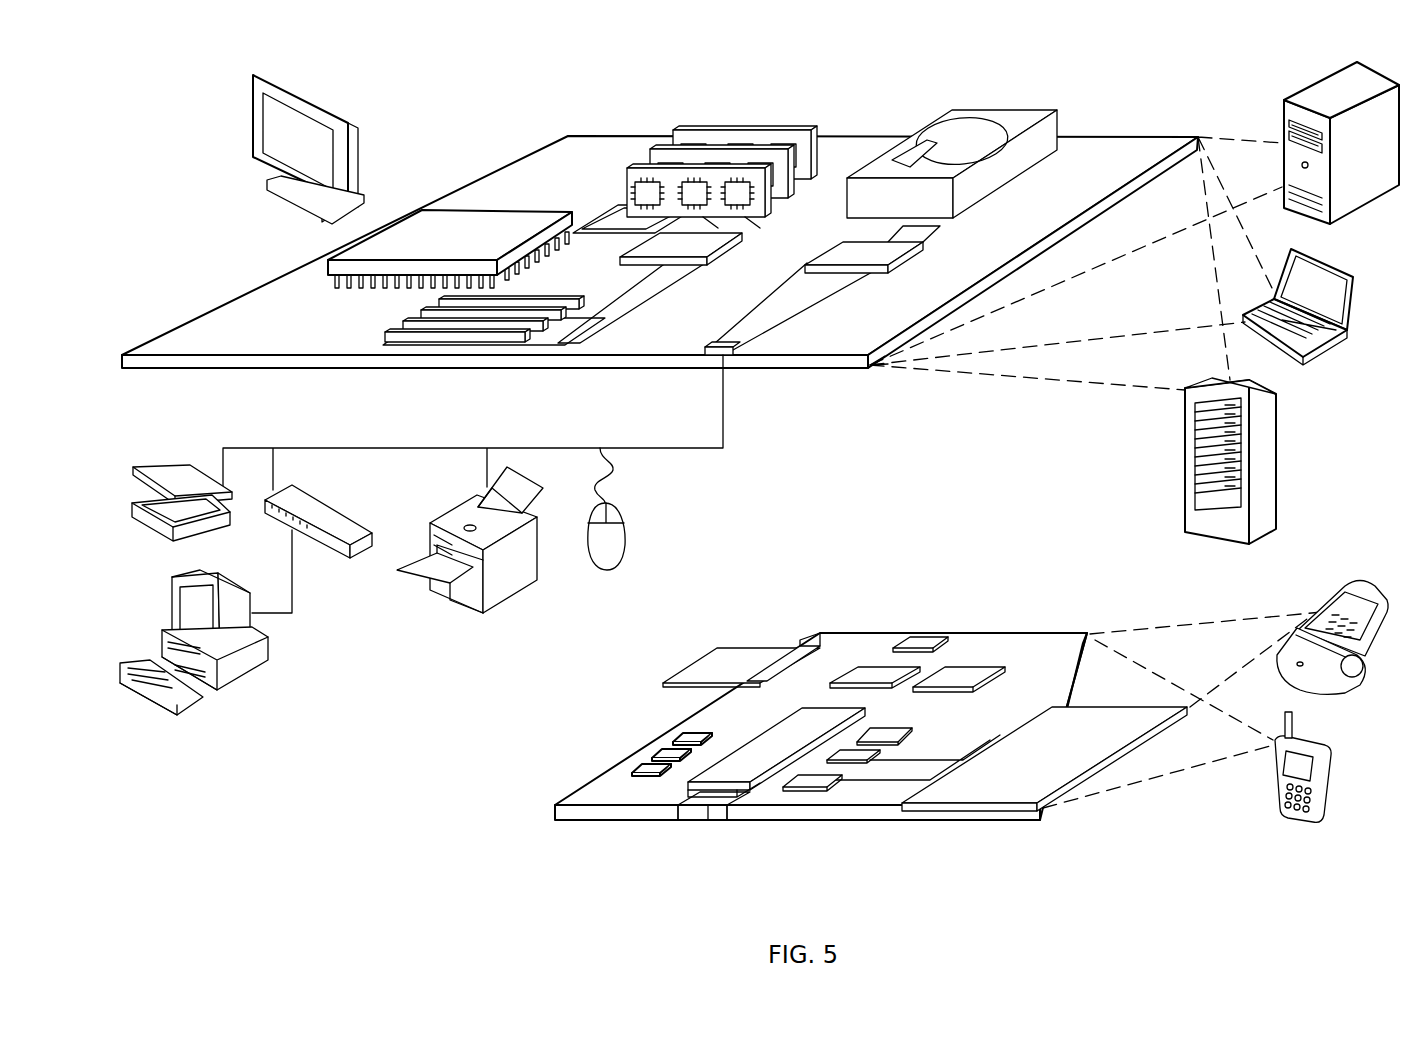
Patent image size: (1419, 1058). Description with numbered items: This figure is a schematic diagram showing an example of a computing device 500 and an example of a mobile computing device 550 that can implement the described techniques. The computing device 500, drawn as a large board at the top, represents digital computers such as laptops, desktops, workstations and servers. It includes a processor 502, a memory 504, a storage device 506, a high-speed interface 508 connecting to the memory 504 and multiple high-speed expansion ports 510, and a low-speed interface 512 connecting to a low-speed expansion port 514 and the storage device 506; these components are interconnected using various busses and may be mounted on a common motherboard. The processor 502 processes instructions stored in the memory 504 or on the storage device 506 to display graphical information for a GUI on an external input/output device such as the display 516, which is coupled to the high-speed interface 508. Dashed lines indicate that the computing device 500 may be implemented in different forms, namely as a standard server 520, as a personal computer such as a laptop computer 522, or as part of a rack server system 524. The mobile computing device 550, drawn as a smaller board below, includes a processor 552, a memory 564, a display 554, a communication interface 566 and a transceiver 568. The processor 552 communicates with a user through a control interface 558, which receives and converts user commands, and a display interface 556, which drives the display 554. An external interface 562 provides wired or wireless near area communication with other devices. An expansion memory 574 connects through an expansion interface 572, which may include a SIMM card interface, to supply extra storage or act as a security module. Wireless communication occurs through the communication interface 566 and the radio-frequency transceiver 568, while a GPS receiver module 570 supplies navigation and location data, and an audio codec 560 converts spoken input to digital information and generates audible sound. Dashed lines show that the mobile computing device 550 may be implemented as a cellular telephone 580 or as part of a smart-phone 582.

The computing device 500 is at (464, 106).
The processor 502 is at (328, 262).
The memory 504 is at (675, 130).
The storage device 506 is at (955, 132).
The high-speed interface 508 is at (667, 247).
The high-speed expansion ports 510 is at (385, 333).
The low-speed interface 512 is at (847, 250).
The low-speed expansion port 514 is at (733, 357).
The display 516 is at (256, 84).
The standard server 520 is at (1284, 137).
The laptop computer 522 is at (1348, 284).
The rack server system 524 is at (1185, 505).
The mobile computing device 550 is at (524, 823).
The processor 552 is at (747, 772).
The display 554 is at (1002, 790).
The display interface 556 is at (820, 780).
The control interface 558 is at (857, 760).
The audio codec 560 is at (885, 735).
The external interface 562 is at (708, 821).
The memory 564 is at (635, 768).
The communication interface 566 is at (875, 676).
The transceiver 568 is at (960, 675).
The GPS receiver module 570 is at (930, 640).
The expansion interface 572 is at (800, 652).
The expansion memory 574 is at (717, 650).
The cellular telephone 580 is at (1337, 585).
The smart-phone 582 is at (1272, 768).